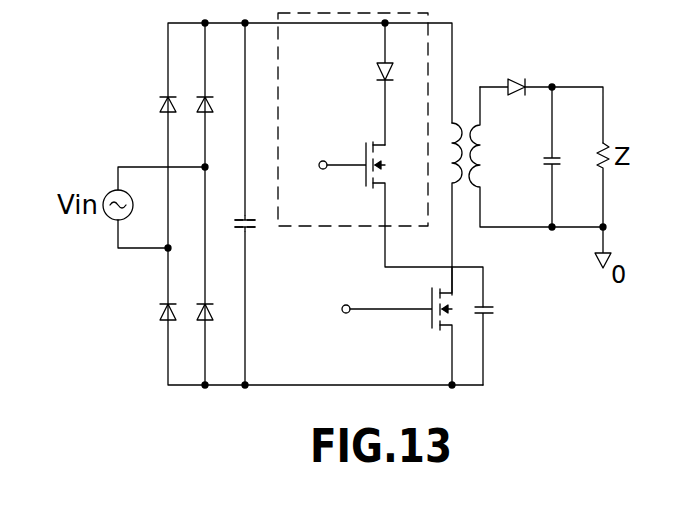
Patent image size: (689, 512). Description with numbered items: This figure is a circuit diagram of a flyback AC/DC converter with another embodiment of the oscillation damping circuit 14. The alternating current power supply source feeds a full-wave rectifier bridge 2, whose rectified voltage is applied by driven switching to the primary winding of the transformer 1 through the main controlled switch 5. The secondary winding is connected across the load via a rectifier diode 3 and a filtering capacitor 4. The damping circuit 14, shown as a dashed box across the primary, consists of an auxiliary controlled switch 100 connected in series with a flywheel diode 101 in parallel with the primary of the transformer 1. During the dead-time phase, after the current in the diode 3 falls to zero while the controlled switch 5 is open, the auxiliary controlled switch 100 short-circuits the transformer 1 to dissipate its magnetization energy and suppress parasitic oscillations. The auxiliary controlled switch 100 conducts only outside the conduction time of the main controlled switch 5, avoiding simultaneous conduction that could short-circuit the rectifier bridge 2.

The transformer 1 is at (466, 93).
The full-wave rectifier bridge 2 is at (200, 88).
The rectifier diode 3 is at (516, 82).
The filtering capacitor 4 is at (562, 160).
The controlled switch 5 is at (437, 322).
The damping circuit 14 is at (315, 228).
The auxiliary controlled switch 100 is at (372, 183).
The flywheel diode 101 is at (380, 72).